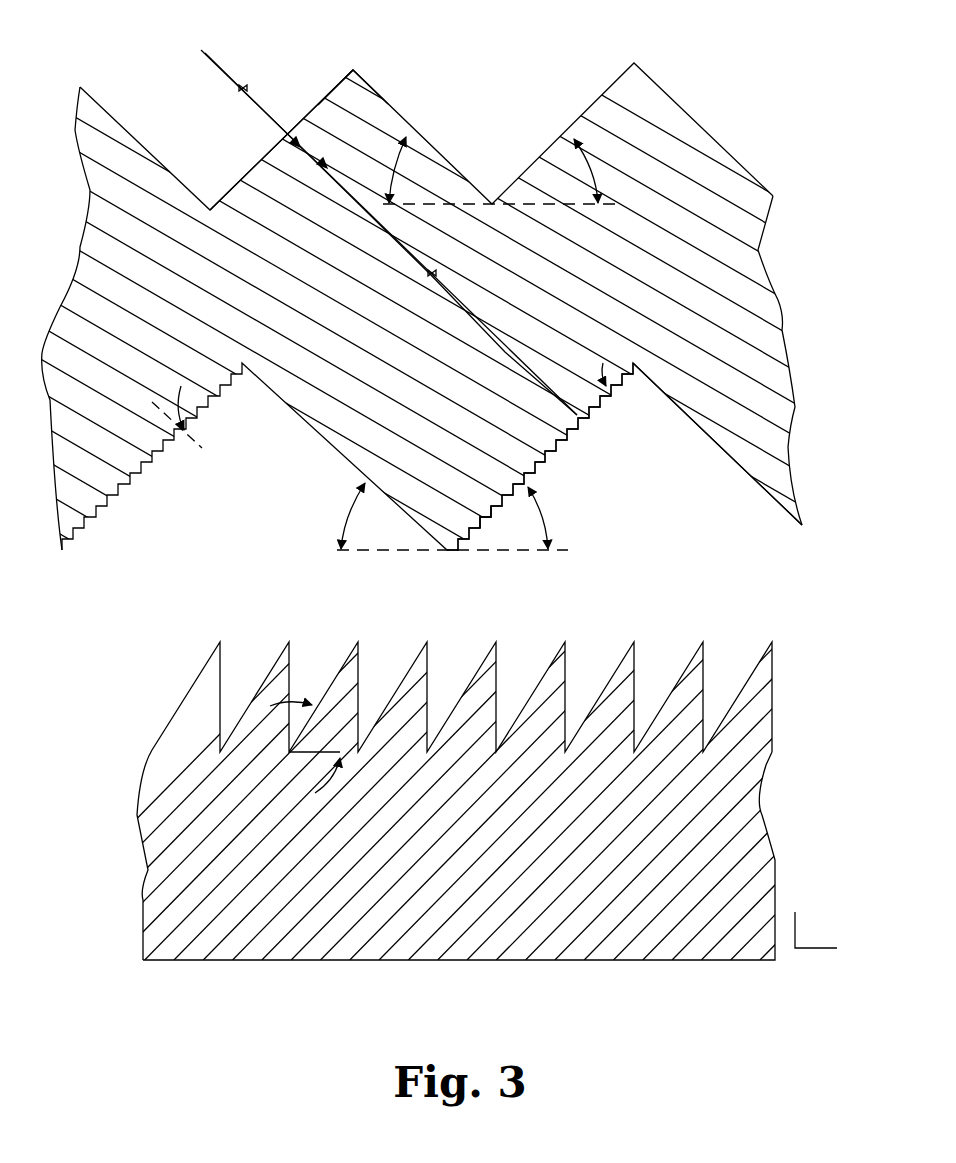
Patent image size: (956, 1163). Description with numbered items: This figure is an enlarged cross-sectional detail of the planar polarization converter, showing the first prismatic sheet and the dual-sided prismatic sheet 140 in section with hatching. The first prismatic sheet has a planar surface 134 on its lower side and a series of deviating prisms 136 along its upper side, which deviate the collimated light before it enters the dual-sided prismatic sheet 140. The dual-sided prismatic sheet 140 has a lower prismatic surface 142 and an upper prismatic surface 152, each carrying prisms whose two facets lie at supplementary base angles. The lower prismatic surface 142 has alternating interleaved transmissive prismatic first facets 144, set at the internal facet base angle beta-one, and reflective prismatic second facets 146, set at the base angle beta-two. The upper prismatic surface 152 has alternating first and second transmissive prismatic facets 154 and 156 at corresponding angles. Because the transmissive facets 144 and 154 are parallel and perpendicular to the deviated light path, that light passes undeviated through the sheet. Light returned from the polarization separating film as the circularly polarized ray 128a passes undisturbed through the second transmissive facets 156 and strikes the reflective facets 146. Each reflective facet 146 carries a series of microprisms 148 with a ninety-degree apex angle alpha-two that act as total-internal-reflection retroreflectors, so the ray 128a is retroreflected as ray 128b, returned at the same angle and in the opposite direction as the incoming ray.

The circularly polarized light ray 128a is at (463, 298).
The retroreflected light ray 128b is at (502, 348).
The planar surface 134 is at (597, 960).
The deviating prisms 136 is at (748, 693).
The dual-sided prismatic sheet 140 is at (735, 288).
The lower prismatic surface 142 is at (808, 347).
The transmissive prismatic first facets 144 is at (698, 427).
The reflective prismatic second facets 146 is at (550, 452).
The microprisms 148 is at (478, 516).
The upper prismatic surface 152 is at (790, 57).
The first transmissive prismatic facets 154 is at (398, 110).
The second transmissive prismatic facets 156 is at (323, 97).